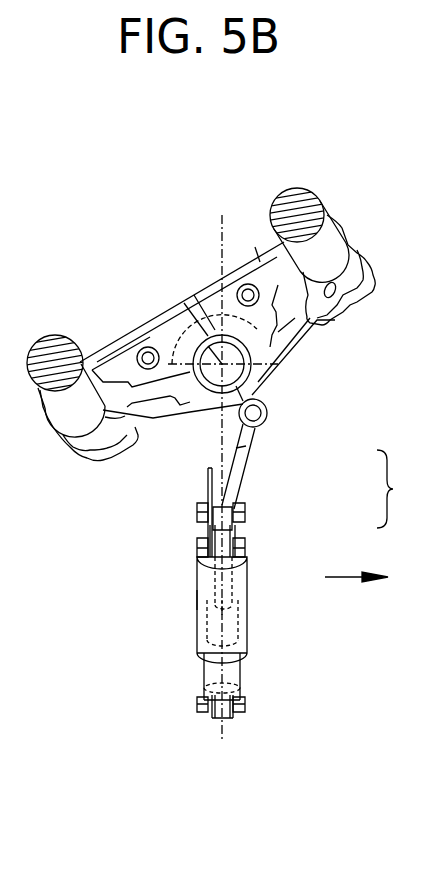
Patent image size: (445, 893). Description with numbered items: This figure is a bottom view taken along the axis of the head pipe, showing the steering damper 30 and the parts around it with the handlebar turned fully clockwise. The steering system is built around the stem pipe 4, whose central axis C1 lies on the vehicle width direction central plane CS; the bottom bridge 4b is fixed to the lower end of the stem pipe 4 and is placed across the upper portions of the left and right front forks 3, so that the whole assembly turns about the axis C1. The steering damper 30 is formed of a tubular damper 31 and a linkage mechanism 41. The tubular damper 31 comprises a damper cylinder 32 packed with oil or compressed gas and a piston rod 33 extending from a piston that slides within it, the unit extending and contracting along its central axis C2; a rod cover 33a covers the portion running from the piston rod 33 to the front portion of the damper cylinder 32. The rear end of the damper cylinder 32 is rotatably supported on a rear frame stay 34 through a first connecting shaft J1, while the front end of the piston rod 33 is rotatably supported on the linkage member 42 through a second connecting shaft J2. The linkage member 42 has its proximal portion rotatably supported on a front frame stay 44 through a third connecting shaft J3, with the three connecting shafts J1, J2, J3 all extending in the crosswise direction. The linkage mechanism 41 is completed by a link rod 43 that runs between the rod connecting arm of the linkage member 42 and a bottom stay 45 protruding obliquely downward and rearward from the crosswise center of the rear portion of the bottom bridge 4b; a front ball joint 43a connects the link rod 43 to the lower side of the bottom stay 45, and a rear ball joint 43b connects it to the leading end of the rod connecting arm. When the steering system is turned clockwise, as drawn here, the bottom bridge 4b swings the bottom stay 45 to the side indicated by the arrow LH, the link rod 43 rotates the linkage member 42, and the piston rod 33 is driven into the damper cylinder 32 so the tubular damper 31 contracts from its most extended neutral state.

The front fork 3 is at (42, 340).
The stem pipe 4 is at (190, 345).
The bottom bridge 4b is at (255, 247).
The central axis C1 is at (208, 346).
The vehicle width direction central plane CS is at (222, 222).
The bottom stay 45 is at (260, 395).
The linkage mechanism 41 is at (273, 490).
The link rod 43 is at (251, 487).
The front ball joint 43a is at (232, 452).
The rear ball joint 43b is at (210, 520).
The linkage member 42 is at (246, 532).
The front frame stay 44 is at (208, 488).
The third connecting shaft J3 is at (240, 510).
The second connecting shaft J2 is at (247, 550).
The first connecting shaft J1 is at (245, 707).
The steering damper 30 is at (250, 668).
The tubular damper 31 is at (250, 593).
The piston rod 33 is at (212, 590).
The rod cover 33a is at (200, 602).
The damper cylinder 32 is at (240, 662).
The central axis C2 is at (247, 688).
The rear frame stay 34 is at (237, 718).
The left-hand direction LH is at (373, 577).